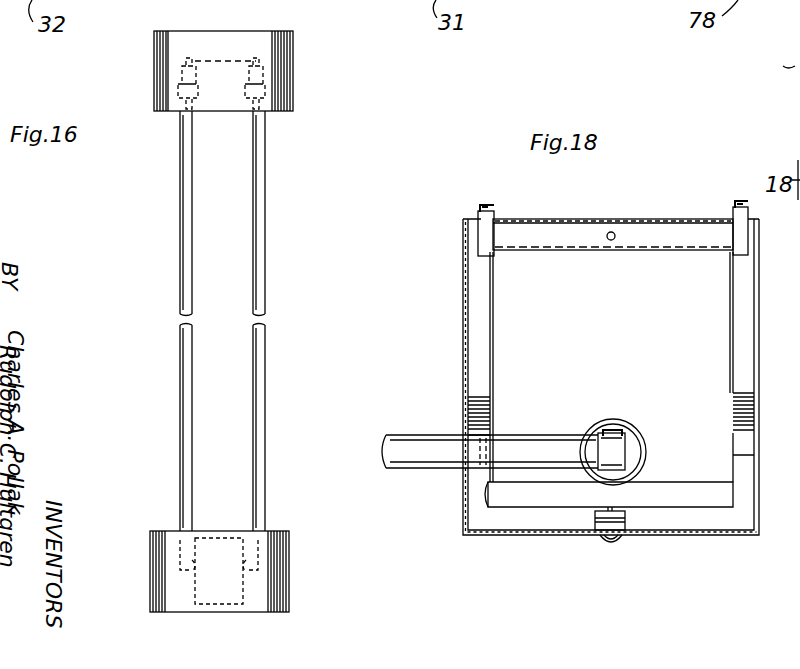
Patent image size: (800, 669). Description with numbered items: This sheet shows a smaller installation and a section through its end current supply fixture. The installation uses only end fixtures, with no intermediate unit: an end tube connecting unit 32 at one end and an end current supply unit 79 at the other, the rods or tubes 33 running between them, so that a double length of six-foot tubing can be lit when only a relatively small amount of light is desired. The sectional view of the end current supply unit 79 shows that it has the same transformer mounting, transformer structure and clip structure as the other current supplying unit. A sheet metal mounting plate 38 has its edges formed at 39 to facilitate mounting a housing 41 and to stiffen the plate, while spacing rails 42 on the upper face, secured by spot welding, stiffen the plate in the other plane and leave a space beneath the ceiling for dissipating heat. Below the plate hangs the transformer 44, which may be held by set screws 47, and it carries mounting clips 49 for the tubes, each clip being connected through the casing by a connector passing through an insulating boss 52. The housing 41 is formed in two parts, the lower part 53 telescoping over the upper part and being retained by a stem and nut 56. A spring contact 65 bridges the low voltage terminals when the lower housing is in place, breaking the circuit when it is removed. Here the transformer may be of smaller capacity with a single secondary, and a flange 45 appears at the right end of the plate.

In FIG. 16, the end tube connecting unit 32 is at (296, 103).
In FIG. 16, the rods 33 is at (180, 246).
In FIG. 18, the rods 33 is at (404, 470).
In FIG. 16, the end current supply unit 79 is at (297, 573).
In FIG. 18, the end current supply unit 79 is at (456, 230).
In FIG. 18, the mounting plate 38 is at (545, 220).
In FIG. 18, the formed edges 39 is at (480, 258).
In FIG. 18, the housing 41 is at (464, 361).
In FIG. 18, the spacing rails 42 is at (486, 206).
In FIG. 18, the transformer 44 is at (634, 347).
In FIG. 18, the right flange 45 is at (750, 238).
In FIG. 18, the set screws 47 is at (613, 232).
In FIG. 18, the mounting clips 49 is at (610, 432).
In FIG. 18, the insulating boss 52 is at (638, 434).
In FIG. 18, the lower housing part 53 is at (478, 535).
In FIG. 18, the nut 56 is at (612, 545).
In FIG. 18, the spring contact 65 is at (600, 522).